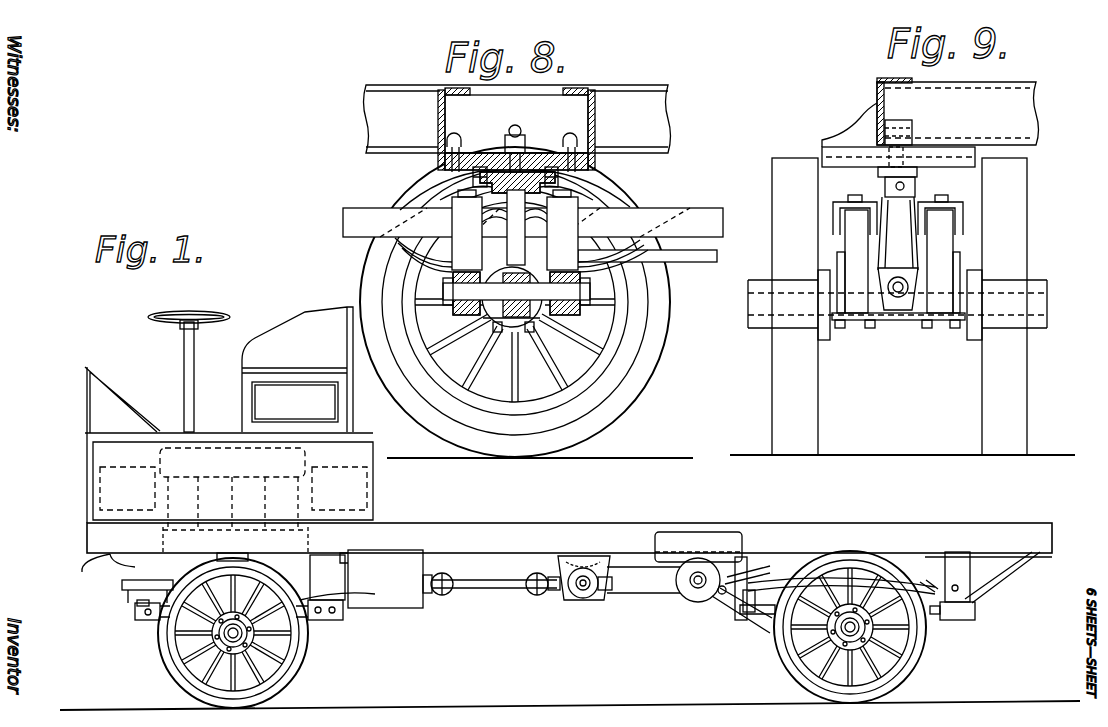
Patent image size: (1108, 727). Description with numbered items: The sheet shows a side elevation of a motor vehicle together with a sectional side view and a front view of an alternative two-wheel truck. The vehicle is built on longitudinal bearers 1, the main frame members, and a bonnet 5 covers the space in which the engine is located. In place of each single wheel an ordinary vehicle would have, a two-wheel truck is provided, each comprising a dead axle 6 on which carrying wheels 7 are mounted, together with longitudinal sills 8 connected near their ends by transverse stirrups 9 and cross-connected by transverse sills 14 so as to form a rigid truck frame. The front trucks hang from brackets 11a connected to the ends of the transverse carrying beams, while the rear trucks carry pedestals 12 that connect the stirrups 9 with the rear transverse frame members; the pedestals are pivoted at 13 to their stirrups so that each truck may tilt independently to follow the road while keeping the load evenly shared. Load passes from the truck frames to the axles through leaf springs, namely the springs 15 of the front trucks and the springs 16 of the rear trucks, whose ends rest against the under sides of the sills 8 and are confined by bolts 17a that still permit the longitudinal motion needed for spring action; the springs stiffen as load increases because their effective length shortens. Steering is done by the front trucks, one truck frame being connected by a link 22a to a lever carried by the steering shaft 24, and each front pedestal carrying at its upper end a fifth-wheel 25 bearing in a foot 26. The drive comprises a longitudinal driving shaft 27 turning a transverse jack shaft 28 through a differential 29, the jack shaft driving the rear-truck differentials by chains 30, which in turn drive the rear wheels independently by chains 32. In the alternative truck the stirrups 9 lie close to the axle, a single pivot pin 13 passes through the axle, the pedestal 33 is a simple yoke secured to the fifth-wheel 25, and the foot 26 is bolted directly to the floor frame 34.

In FIG. 1, the longitudinal bearers 1 is at (483, 531).
In FIG. 8, the longitudinal bearers 1 is at (660, 134).
In FIG. 9, the longitudinal bearers 1 is at (877, 90).
In FIG. 1, the bonnet 5 is at (347, 458).
In FIG. 1, the axle 6 is at (255, 657).
In FIG. 8, the axle 6 is at (547, 343).
In FIG. 9, the axle 6 is at (942, 306).
In FIG. 1, the carrying wheels 7 is at (296, 651).
In FIG. 8, the carrying wheels 7 is at (372, 262).
In FIG. 9, the carrying wheels 7 is at (1010, 257).
In FIG. 1, the longitudinal sills 8 is at (140, 618).
In FIG. 8, the longitudinal sills 8 is at (647, 220).
In FIG. 9, the longitudinal sills 8 is at (955, 222).
In FIG. 1, the transverse stirrups 9 is at (742, 618).
In FIG. 8, the transverse stirrups 9 is at (467, 230).
In FIG. 9, the transverse stirrups 9 is at (927, 350).
In FIG. 1, the brackets 11a is at (85, 572).
In FIG. 1, the pedestals 12 is at (960, 562).
In FIG. 8, the pivot 13 is at (458, 312).
In FIG. 9, the pivot 13 is at (895, 300).
In FIG. 1, the transverse sills 14 is at (136, 603).
In FIG. 1, the springs of the front trucks 15 is at (200, 643).
In FIG. 8, the springs of the front trucks 15 is at (400, 268).
In FIG. 9, the springs of the front trucks 15 is at (942, 262).
In FIG. 1, the springs of the rear trucks 16 is at (933, 598).
In FIG. 1, the bolts 17a is at (320, 625).
In FIG. 1, the link 22a is at (160, 583).
In FIG. 1, the steering shaft 24 is at (192, 387).
In FIG. 8, the fifth-wheel 25 is at (572, 173).
In FIG. 9, the fifth-wheel 25 is at (822, 152).
In FIG. 8, the foot 26 is at (594, 160).
In FIG. 1, the longitudinal driving shaft 27 is at (510, 590).
In FIG. 1, the transverse jack shaft 28 is at (575, 600).
In FIG. 1, the differential 29 is at (596, 601).
In FIG. 1, the chains 30 is at (636, 596).
In FIG. 1, the chains 32 is at (732, 605).
In FIG. 8, the truck pedestal 33 is at (513, 220).
In FIG. 9, the truck pedestal 33 is at (890, 207).
In FIG. 8, the floor frame 34 is at (447, 118).
In FIG. 9, the floor frame 34 is at (1015, 116).